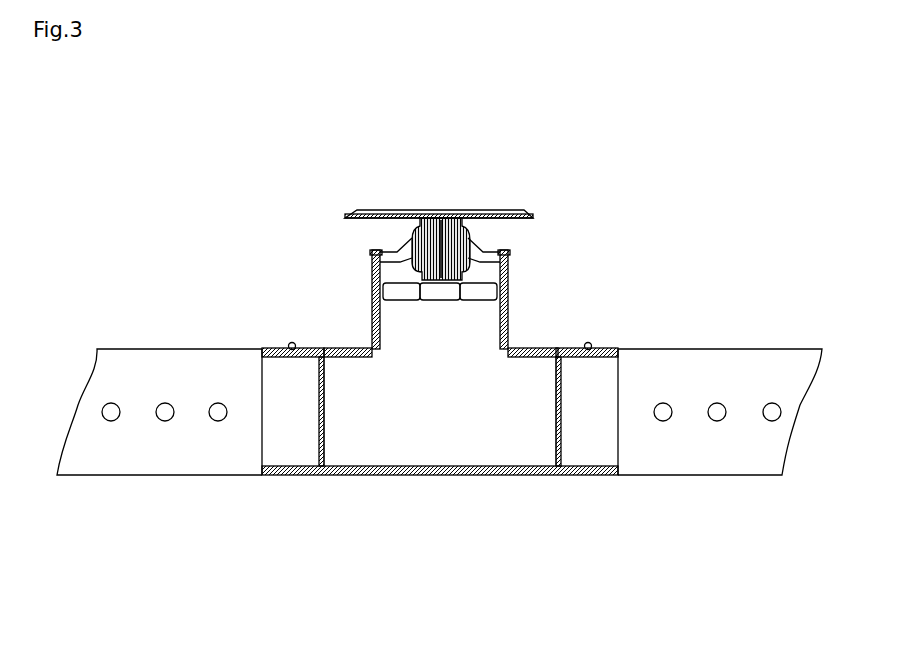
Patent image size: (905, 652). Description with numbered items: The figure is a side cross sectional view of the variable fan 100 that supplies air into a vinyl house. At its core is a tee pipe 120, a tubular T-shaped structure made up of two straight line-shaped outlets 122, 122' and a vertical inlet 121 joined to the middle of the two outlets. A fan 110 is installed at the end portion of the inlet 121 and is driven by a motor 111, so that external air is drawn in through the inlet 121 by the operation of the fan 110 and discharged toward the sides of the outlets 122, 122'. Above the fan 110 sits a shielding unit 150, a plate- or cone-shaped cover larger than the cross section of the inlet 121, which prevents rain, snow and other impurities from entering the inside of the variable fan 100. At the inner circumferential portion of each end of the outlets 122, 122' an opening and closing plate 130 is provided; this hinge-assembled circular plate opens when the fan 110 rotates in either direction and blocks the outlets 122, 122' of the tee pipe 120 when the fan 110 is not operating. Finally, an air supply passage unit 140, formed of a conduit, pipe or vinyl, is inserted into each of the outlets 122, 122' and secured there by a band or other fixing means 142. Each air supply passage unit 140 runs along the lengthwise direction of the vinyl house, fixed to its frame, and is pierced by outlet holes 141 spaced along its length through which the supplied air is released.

The variable fan 100 is at (395, 162).
The fan 110 is at (482, 288).
The motor 111 is at (470, 233).
The tee pipe 120 is at (560, 573).
The inlet 121 is at (451, 318).
The outlet 122 is at (315, 458).
The outlet 122' is at (560, 458).
The opening and closing plate 130 is at (323, 410).
The air supply passage unit 140 is at (128, 372).
The outlet hole 141 is at (218, 412).
The fixing means 142 is at (292, 346).
The shielding unit 150 is at (490, 210).